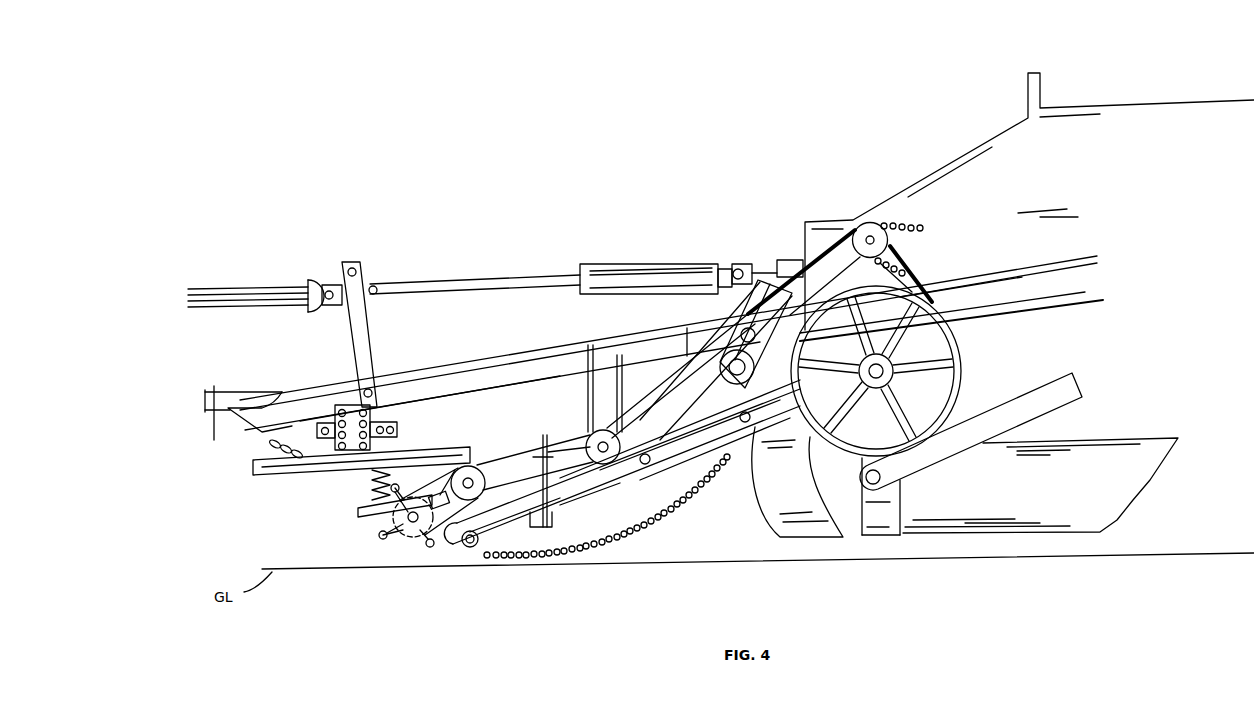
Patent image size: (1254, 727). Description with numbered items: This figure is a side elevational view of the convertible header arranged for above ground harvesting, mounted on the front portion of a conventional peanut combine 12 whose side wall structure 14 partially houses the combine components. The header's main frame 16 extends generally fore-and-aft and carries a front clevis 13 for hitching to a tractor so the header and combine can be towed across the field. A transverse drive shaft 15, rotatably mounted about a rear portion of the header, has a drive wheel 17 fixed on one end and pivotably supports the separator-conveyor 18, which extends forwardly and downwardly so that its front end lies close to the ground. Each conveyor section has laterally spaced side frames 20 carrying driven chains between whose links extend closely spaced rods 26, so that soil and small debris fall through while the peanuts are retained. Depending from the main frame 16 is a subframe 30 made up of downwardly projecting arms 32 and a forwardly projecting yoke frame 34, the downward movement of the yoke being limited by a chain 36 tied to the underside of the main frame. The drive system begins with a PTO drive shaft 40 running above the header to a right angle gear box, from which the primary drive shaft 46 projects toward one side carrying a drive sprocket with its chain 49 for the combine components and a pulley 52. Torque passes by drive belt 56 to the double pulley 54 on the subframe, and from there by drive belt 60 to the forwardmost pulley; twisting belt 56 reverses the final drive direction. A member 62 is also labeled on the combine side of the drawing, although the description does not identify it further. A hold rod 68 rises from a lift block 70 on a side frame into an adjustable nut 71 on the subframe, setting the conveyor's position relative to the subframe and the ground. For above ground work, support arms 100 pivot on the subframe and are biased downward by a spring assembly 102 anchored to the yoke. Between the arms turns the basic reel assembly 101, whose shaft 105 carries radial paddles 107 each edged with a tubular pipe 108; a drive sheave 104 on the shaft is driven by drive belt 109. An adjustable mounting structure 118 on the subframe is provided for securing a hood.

The peanut combine 12 is at (972, 124).
The front clevis 13 is at (245, 392).
The side wall structure 14 is at (1003, 305).
The drive shaft 15 is at (882, 368).
The main frame 16 is at (668, 343).
The drive wheel 17 is at (962, 381).
The separator-conveyor 18 is at (540, 252).
The side frames 20 is at (680, 429).
The rods 26 is at (518, 558).
The subframe 30 is at (205, 455).
The arms 32 is at (606, 388).
The yoke frame 34 is at (256, 466).
The chain 36 is at (270, 443).
The PTO drive shaft 40 is at (520, 290).
The primary drive shaft 46 is at (877, 240).
The chain 49 is at (921, 226).
The pulley 52 is at (868, 233).
The double pulley 54 is at (614, 440).
The drive belt 56 is at (705, 342).
The drive belt 60 is at (548, 435).
The side beam 62 is at (945, 300).
The hold rod 68 is at (490, 452).
The lift block 70 is at (532, 510).
The adjustable nut 71 is at (556, 450).
The support arms 100 is at (358, 509).
The basic reel assembly 101 is at (358, 528).
The spring assembly 102 is at (368, 490).
The drive sheave 104 is at (447, 501).
The shaft 105 is at (408, 536).
The paddles 107 is at (398, 486).
The tubular pipe 108 is at (404, 486).
The drive belt 109 is at (455, 470).
The adjustable mounting structure 118 is at (397, 426).